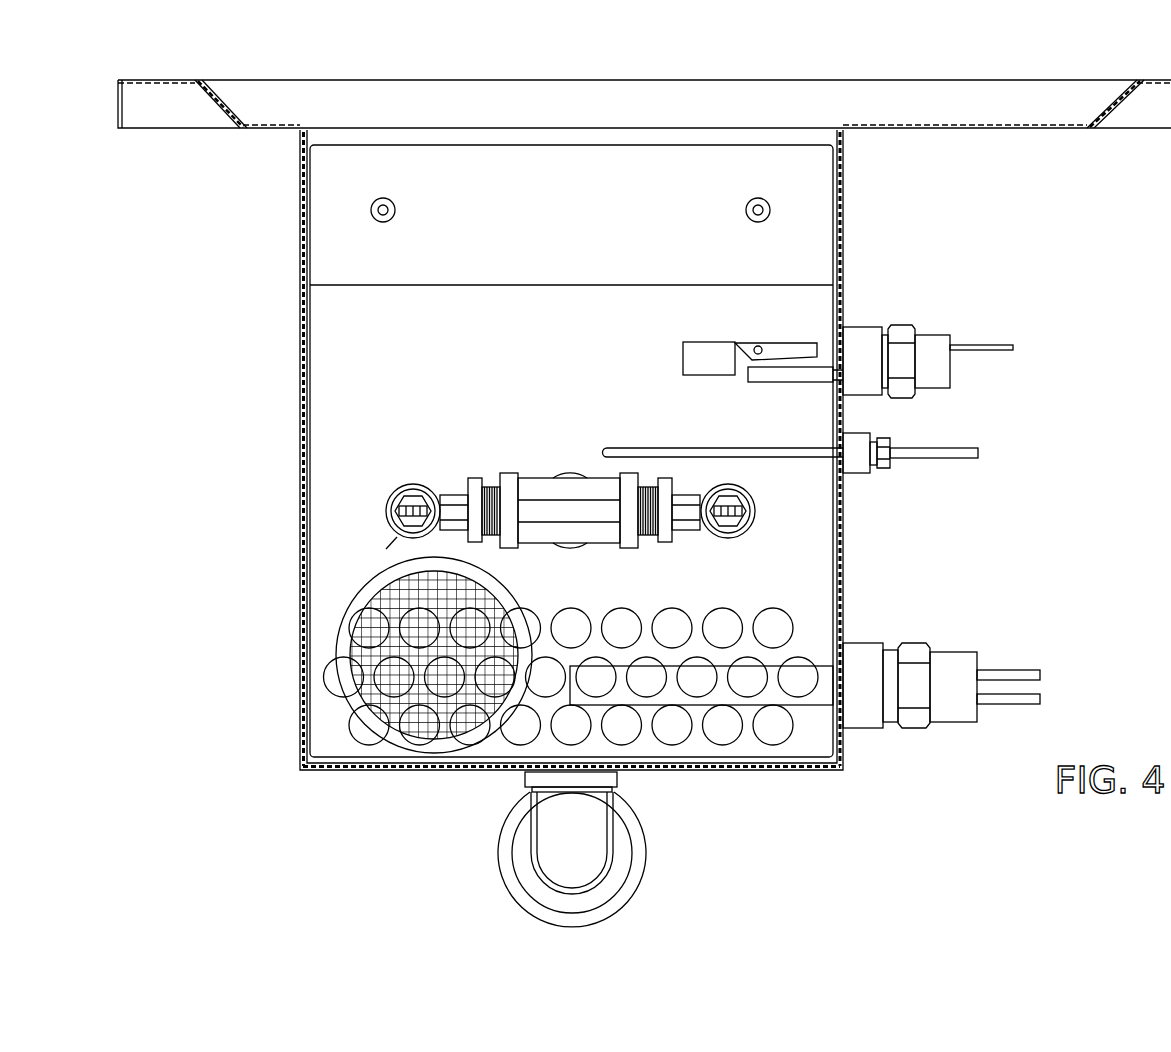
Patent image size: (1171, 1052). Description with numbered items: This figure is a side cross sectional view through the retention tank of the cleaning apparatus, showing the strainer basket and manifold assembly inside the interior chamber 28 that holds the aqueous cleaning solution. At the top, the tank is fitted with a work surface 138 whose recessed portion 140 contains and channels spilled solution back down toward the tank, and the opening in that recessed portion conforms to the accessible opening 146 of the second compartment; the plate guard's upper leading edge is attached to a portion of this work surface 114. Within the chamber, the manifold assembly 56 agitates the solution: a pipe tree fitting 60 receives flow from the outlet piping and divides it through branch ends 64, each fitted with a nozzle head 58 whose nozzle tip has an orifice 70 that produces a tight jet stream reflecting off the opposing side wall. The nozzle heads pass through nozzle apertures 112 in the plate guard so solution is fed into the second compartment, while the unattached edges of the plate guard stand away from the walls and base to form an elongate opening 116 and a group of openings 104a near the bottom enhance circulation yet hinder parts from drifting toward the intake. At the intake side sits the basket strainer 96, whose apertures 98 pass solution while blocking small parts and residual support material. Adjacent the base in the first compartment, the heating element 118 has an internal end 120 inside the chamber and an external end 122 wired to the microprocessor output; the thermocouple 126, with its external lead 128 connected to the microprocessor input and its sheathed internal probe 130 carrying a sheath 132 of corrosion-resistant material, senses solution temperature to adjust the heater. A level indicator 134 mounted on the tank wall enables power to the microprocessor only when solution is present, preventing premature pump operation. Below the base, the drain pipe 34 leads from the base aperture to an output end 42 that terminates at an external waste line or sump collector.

The interior chamber 28 is at (567, 375).
The drain pipe 34 is at (617, 787).
The output end 42 is at (605, 880).
The manifold assembly 56 is at (637, 552).
The nozzle head 58 is at (745, 503).
The pipe tree fitting 60 is at (542, 477).
The branch end 64 is at (448, 493).
The orifice 70 is at (397, 497).
The basket strainer 96 is at (351, 703).
The apertures 98 is at (396, 730).
The openings 104a is at (323, 675).
The nozzle apertures 112 is at (397, 537).
The work surface 114 is at (300, 263).
The elongate opening 116 is at (475, 770).
The heating element 118 is at (878, 643).
The internal end 120 is at (813, 705).
The external end 122 is at (1003, 668).
The thermocouple 126 is at (977, 458).
The external lead 128 is at (950, 448).
The internal probe 130 is at (607, 450).
The sheath 132 is at (660, 448).
The level indicator 134 is at (878, 327).
The work surface 138 is at (178, 80).
The recessed portion 140 is at (294, 128).
The accessible opening 146 is at (550, 128).